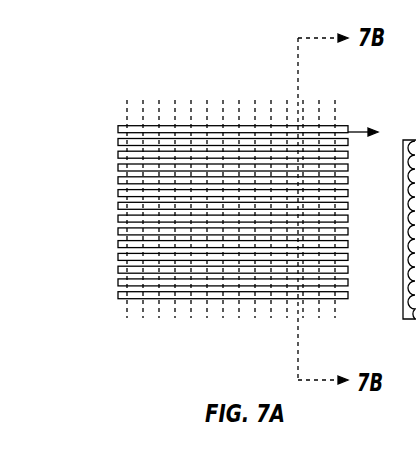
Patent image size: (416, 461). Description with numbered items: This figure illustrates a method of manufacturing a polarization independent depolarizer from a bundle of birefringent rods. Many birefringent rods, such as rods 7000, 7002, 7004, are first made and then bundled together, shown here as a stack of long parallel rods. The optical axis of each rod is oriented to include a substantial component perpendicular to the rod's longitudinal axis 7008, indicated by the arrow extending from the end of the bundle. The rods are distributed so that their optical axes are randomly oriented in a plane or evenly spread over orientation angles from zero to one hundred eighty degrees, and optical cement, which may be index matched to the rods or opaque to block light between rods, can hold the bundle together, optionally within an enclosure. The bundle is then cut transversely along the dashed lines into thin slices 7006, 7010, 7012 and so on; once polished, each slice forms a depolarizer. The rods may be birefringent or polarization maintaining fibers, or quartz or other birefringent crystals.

The birefringent rod 7000 is at (118, 130).
The birefringent rod 7002 is at (118, 143).
The birefringent rod 7004 is at (118, 295).
The slice 7006 is at (282, 126).
The longitudinal axis 7008 is at (355, 128).
The slice 7010 is at (233, 125).
The slice 7012 is at (172, 125).